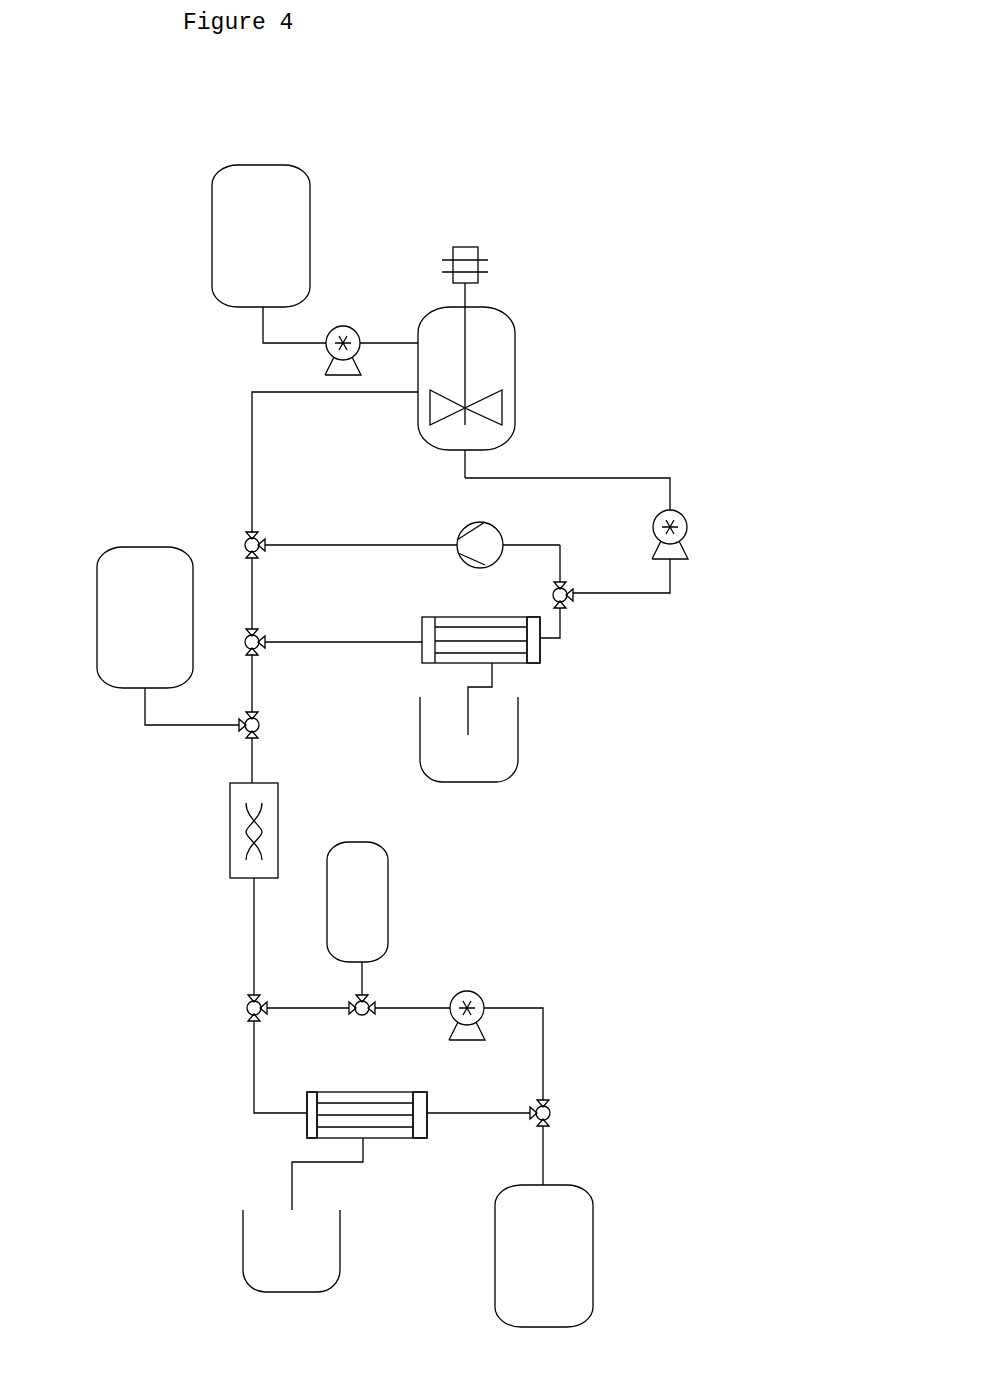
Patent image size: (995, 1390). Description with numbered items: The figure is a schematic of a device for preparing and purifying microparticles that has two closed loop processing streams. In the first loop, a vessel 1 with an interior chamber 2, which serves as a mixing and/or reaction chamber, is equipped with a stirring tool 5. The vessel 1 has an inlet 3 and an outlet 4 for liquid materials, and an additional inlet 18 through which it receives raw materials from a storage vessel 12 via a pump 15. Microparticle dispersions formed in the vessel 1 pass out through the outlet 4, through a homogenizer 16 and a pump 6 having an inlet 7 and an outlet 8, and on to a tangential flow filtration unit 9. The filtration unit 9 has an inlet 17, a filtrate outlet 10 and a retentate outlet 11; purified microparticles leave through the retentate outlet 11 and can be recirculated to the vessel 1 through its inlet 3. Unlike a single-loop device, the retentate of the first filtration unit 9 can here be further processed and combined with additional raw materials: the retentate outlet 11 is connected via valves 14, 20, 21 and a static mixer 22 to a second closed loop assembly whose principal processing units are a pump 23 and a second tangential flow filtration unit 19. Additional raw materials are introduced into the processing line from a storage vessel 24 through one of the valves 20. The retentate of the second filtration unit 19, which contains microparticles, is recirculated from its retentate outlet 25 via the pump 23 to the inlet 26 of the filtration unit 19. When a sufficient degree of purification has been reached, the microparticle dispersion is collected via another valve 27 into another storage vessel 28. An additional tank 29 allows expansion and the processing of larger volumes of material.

The vessel 1 is at (513, 307).
The interior chamber 2 is at (490, 355).
The inlet 3 is at (413, 397).
The outlet 4 is at (463, 452).
The stirring tool 5 is at (490, 403).
The pump 6 is at (686, 530).
The inlet 7 is at (683, 497).
The outlet 8 is at (683, 567).
The filtration unit 9 is at (492, 605).
The filtrate outlet 10 is at (503, 675).
The retentate outlet 11 is at (420, 628).
The storage vessel 12 is at (320, 212).
The valve 14 is at (240, 618).
The pump 15 is at (347, 322).
The homogenizer 16 is at (503, 522).
The inlet 17 is at (550, 652).
The additional inlet 18 is at (415, 337).
The second tangential flow filtration unit 19 is at (407, 1147).
The valve 20 is at (240, 727).
The valve 21 is at (245, 1017).
The static mixer 22 is at (283, 803).
The pump 23 is at (481, 988).
The storage vessel 24 is at (95, 617).
The retentate outlet 25 is at (302, 1118).
The inlet 26 is at (430, 1118).
The valve 27 is at (552, 1115).
The storage vessel 28 is at (600, 1252).
The tank 29 is at (398, 895).